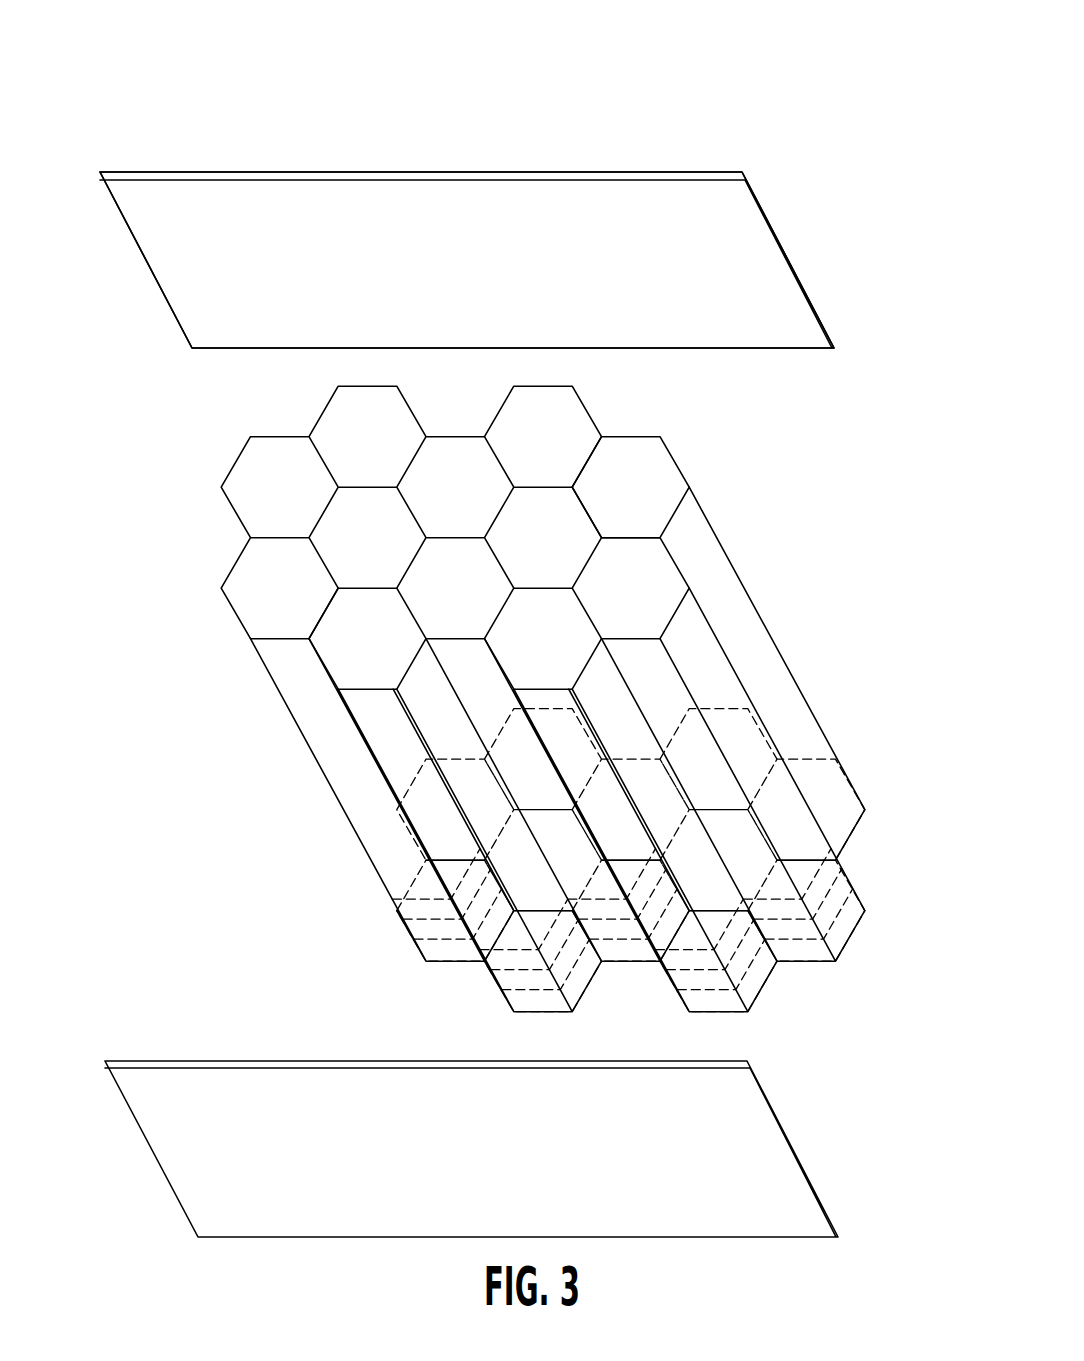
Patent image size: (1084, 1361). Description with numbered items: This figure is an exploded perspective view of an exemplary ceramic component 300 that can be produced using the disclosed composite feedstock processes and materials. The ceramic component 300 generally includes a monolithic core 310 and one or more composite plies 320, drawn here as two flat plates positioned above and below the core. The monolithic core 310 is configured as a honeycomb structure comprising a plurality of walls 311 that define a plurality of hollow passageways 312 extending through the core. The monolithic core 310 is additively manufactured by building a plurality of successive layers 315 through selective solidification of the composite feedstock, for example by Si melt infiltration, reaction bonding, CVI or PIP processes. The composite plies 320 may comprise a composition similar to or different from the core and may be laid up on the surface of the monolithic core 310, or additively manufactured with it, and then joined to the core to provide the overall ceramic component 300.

The ceramic component 300 is at (822, 125).
The monolithic core 310 is at (289, 711).
The walls 311 is at (324, 612).
The hollow passageways 312 is at (660, 488).
The successive layers 315 is at (850, 880).
The composite plies 320 is at (139, 252).